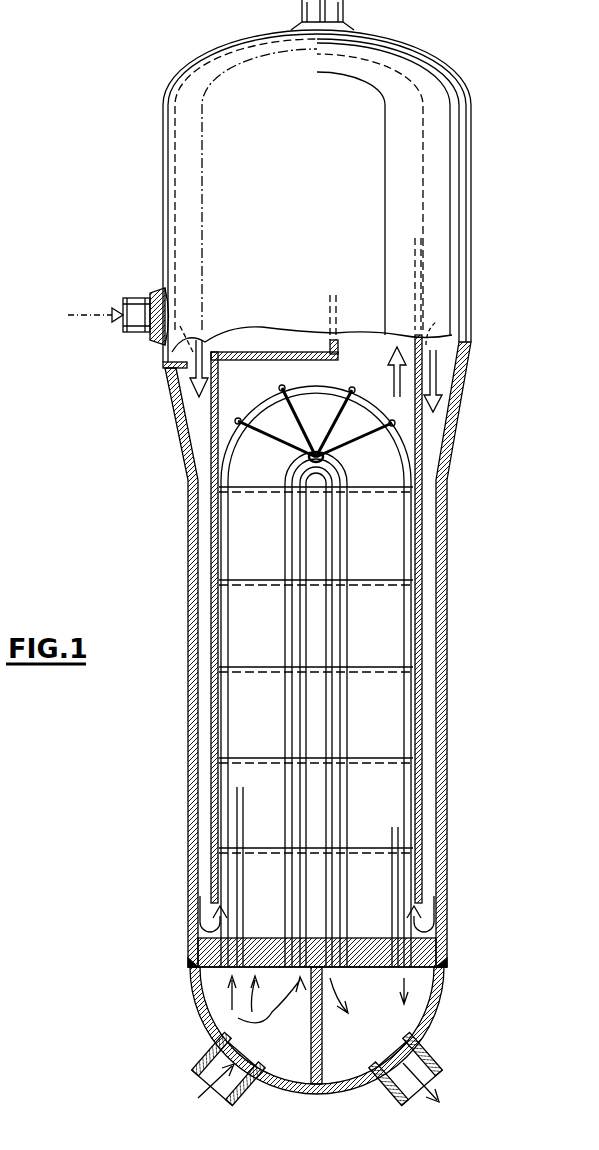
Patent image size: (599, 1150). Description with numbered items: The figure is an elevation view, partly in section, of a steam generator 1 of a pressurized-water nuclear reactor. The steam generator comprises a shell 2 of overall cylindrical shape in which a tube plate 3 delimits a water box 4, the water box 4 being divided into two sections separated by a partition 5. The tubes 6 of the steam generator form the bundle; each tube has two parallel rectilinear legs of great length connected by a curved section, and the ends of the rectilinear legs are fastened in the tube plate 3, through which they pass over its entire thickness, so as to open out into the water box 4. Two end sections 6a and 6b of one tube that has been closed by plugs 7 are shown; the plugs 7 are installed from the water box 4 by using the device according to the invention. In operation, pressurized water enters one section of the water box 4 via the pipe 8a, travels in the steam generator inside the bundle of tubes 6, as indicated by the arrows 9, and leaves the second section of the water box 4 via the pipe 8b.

The steam generator vessel 1 is at (473, 272).
The shell 2 is at (228, 191).
The tube plate 3 is at (373, 967).
The water box 4 is at (369, 1012).
The partition 5 is at (305, 1052).
The tubes 6 is at (400, 727).
The end section of a tube 6a is at (240, 827).
The end section of a tube 6b is at (392, 836).
The plugs 7 is at (232, 985).
The pipe 8a is at (203, 1060).
The pipe 8b is at (437, 1060).
The arrows 9 is at (267, 1014).